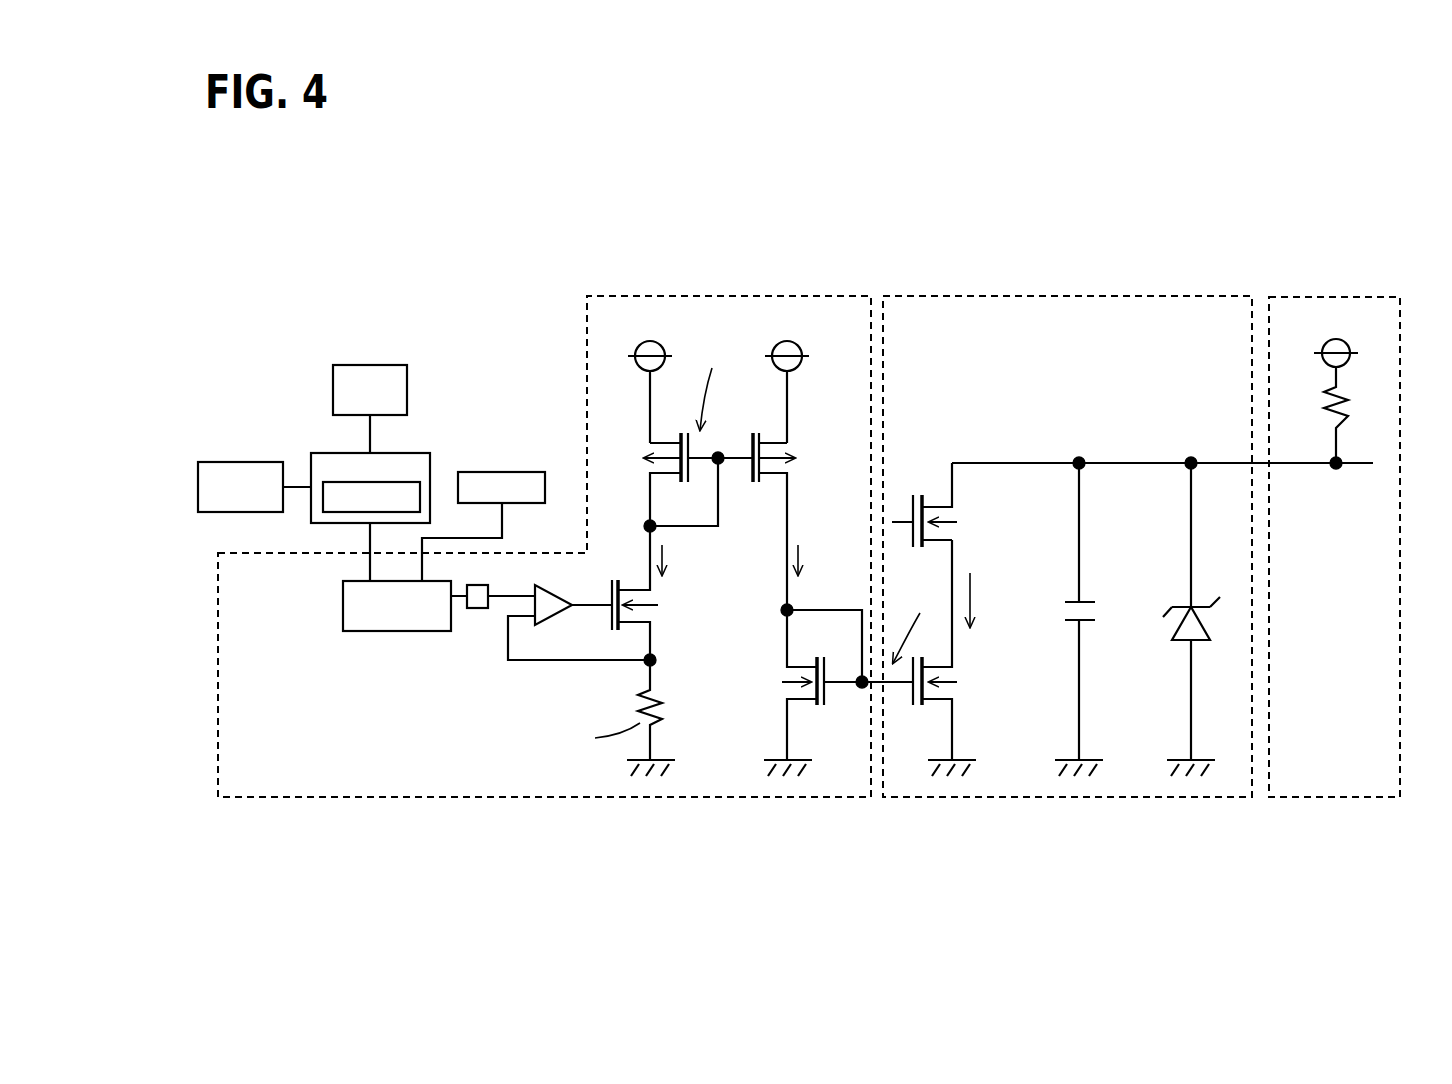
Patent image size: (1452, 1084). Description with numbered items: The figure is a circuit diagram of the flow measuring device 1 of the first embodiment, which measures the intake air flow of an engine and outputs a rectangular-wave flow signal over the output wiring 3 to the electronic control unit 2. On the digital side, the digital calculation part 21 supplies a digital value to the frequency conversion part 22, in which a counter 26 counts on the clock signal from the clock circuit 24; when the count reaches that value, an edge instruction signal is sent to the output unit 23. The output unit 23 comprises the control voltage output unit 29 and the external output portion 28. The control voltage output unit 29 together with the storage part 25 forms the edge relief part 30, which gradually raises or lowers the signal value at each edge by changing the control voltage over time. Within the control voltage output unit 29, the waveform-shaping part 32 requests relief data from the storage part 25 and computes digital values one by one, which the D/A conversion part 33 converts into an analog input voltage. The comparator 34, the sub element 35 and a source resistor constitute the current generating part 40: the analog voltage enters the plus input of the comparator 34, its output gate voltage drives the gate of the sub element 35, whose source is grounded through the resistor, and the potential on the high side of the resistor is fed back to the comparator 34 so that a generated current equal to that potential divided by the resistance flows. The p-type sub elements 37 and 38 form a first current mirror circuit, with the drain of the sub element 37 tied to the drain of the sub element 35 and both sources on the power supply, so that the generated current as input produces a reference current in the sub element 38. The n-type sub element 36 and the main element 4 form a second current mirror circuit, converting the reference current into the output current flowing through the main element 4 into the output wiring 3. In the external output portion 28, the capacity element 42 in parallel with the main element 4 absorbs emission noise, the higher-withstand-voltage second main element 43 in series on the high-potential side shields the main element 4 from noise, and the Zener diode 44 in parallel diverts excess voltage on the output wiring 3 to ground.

The flow measuring device 1 is at (245, 335).
The electronic control unit (ECU) 2 is at (1300, 292).
The output wiring 3 is at (1220, 460).
The main element 4 is at (952, 675).
The digital calculation part 21 is at (223, 460).
The frequency conversion part 22 is at (325, 450).
The output unit 23 is at (985, 503).
The clock circuit 24 is at (367, 365).
The storage part 25 is at (522, 471).
The counter 26 is at (420, 497).
The external output portion 28 is at (1038, 292).
The control voltage output unit 29 is at (740, 292).
The edge relief part 30 is at (687, 292).
The waveform-shaping part 32 is at (343, 602).
The D/A conversion part 33 is at (472, 608).
The comparator 34 is at (550, 598).
The sub element (switching element) 35 is at (645, 598).
The sub element (switching element) 36 is at (780, 690).
The sub element (switching element) 37 is at (647, 468).
The sub element (switching element) 38 is at (790, 447).
The current generating part 40 is at (595, 645).
The capacity element 42 is at (1088, 600).
The second main element 43 is at (950, 517).
The Zener diode 44 is at (1183, 605).